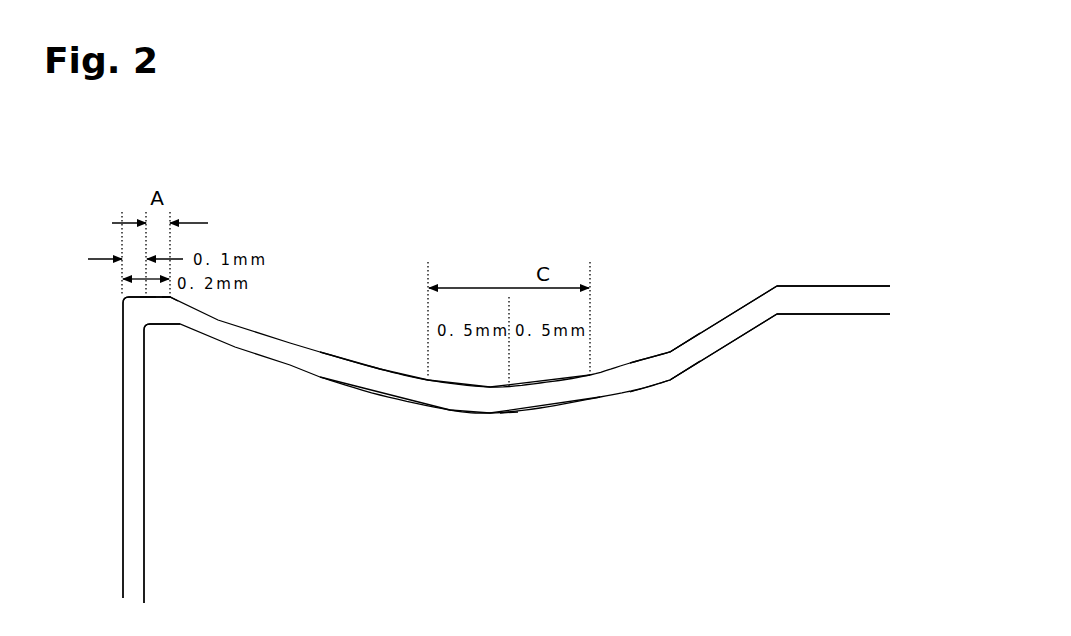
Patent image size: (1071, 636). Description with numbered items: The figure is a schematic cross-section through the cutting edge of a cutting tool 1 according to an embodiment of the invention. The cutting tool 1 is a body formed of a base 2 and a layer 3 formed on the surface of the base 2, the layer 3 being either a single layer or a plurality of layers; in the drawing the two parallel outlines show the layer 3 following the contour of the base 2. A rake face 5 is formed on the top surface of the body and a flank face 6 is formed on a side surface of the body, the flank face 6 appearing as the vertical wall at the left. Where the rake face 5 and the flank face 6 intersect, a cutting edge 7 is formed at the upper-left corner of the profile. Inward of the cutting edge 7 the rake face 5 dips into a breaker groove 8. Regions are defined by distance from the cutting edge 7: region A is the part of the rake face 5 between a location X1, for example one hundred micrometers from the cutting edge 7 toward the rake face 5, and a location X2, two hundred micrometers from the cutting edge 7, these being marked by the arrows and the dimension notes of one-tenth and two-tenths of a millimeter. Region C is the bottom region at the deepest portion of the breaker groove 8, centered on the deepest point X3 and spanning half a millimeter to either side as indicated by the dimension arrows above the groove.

The cutting tool 1 is at (669, 145).
The base 2 is at (820, 335).
The layer 3 is at (787, 300).
The rake face 5 is at (693, 337).
The flank face 6 is at (122, 468).
The cutting edge 7 is at (122, 298).
The breaker groove 8 is at (387, 372).
The location X1 is at (149, 302).
The location X2 is at (174, 302).
The deepest portion X3 is at (509, 394).